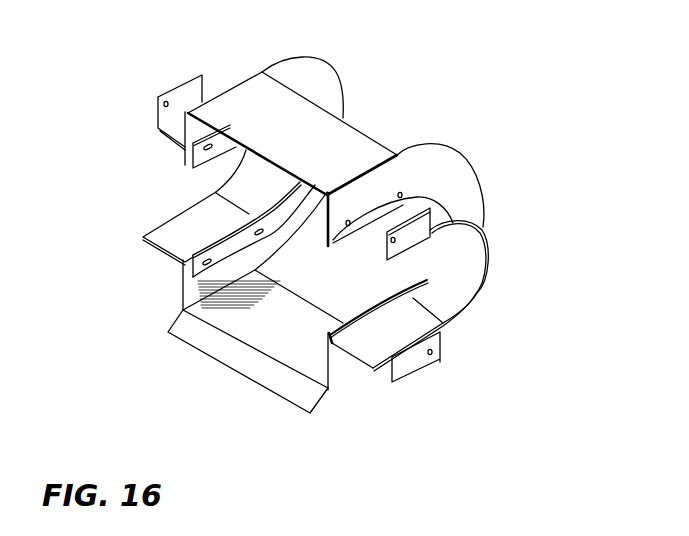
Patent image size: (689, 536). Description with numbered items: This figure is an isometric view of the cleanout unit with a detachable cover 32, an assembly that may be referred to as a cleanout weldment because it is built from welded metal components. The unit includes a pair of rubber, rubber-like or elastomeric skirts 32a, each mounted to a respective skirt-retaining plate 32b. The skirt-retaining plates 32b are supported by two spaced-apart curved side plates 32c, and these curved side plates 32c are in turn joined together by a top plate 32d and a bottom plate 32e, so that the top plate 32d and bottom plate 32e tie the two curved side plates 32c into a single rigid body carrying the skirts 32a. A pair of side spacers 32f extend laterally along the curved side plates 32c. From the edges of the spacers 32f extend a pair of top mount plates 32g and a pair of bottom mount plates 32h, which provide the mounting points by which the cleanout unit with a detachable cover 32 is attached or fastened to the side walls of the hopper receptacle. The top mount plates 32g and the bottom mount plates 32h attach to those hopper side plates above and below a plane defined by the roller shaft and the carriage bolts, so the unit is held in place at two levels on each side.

The cleanout unit with detachable cover 32 is at (106, 80).
The skirts 32a is at (203, 250).
The skirt-retaining plates 32b is at (227, 253).
The curved side plates 32c is at (476, 170).
The top plate 32d is at (334, 143).
The bottom plate 32e is at (311, 339).
The side spacers 32f is at (463, 280).
The top mount plates 32g is at (423, 223).
The bottom mount plates 32h is at (417, 360).